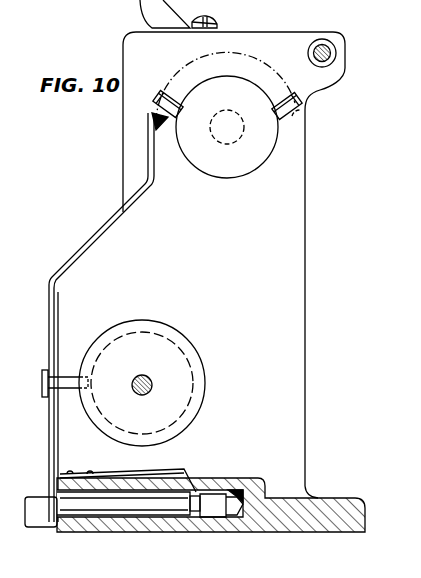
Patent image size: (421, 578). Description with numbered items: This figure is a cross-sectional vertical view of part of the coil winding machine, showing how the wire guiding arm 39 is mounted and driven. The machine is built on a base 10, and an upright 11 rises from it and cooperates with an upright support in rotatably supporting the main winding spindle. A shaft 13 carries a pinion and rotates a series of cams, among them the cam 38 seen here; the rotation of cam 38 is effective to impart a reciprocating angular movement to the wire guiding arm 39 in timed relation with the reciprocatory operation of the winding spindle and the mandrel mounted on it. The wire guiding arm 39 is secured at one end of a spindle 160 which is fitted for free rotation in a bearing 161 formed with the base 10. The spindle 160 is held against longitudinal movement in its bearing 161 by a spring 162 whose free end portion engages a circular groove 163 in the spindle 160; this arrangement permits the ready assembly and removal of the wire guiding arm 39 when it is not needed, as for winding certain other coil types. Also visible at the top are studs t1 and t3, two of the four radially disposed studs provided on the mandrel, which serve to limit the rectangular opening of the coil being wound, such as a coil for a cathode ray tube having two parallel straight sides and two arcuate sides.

The base 10 is at (348, 505).
The upright 11 is at (305, 199).
The shaft 13 is at (150, 389).
The cam 38 is at (204, 386).
The wire guiding arm 39 is at (156, 178).
The spindle 160 is at (124, 496).
The bearing 161 is at (238, 494).
The spring 162 is at (197, 494).
The circular groove 163 is at (217, 493).
The radially disposed stud t1 is at (160, 92).
The radially disposed stud t3 is at (296, 93).